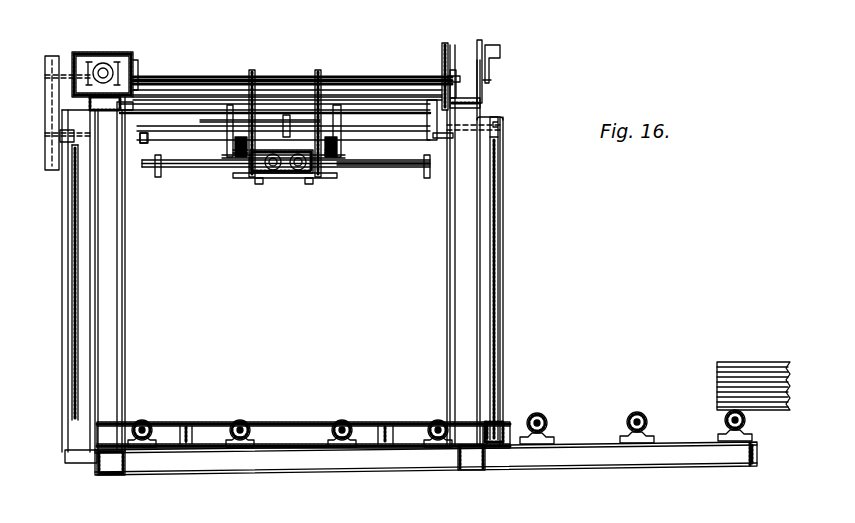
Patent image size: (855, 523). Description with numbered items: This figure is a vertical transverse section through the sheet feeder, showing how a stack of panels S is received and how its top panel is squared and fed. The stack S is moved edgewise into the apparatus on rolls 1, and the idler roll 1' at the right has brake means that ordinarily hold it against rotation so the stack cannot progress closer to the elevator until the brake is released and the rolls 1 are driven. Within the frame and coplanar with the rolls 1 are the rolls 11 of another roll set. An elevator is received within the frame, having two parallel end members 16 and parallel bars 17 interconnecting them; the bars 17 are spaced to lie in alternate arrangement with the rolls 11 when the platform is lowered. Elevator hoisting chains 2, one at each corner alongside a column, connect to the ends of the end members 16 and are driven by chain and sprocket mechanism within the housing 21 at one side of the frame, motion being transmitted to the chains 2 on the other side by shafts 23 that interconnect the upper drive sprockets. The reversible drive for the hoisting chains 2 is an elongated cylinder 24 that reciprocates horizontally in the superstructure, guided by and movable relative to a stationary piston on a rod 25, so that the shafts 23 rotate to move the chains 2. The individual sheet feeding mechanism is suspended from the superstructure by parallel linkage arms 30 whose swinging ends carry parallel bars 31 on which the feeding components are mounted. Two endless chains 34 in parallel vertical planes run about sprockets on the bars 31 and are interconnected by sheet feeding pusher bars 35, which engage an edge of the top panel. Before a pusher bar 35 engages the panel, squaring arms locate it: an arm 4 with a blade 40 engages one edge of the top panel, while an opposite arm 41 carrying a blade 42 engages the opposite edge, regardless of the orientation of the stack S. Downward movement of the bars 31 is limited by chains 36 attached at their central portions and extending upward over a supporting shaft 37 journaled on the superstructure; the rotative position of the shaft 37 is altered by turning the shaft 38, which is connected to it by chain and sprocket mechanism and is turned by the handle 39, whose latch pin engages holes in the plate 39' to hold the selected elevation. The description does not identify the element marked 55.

The rolls 1 is at (587, 411).
The idler roll 1' is at (720, 416).
The elevator hoisting chains 2 is at (72, 265).
The squaring arm 4 is at (203, 167).
The rolls 11 is at (147, 420).
The elevator end members 16 is at (312, 422).
The elevator bars 17 is at (193, 422).
The housing 21 is at (47, 133).
The shafts 23 is at (148, 140).
The cylinder 24 is at (103, 63).
The rod 25 is at (105, 72).
The parallel linkage arms 30 is at (220, 143).
The bars 31 is at (310, 130).
The endless chains 34 is at (250, 110).
The sheet feeding pusher bars 35 is at (330, 178).
The chains 36 is at (303, 90).
The supporting shaft 37 is at (418, 80).
The shaft 38 is at (468, 75).
The handle 39 is at (512, 64).
The plate 39' is at (501, 61).
The blade 40 is at (158, 177).
The squaring arm 41 is at (370, 167).
The blade 42 is at (425, 173).
The rollers 55 is at (283, 176).
The stack of panels S is at (717, 372).